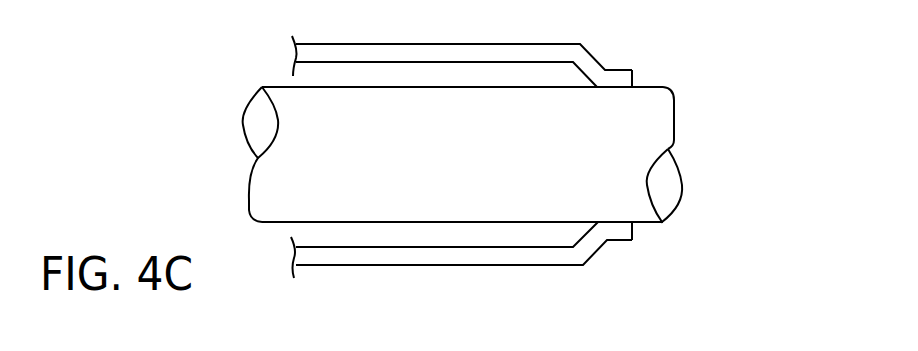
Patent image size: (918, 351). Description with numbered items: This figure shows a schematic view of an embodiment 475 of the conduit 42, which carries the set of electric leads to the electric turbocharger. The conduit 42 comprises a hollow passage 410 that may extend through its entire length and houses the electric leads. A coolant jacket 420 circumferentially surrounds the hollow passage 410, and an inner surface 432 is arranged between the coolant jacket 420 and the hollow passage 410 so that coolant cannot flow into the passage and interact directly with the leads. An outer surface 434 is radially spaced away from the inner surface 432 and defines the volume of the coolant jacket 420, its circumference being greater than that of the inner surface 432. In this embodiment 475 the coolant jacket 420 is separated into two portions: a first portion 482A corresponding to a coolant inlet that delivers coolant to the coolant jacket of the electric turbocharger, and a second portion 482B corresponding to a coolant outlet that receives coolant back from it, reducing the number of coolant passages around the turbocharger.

The outer surface 434 is at (412, 43).
The conduit 42 is at (640, 78).
The inner surface 432 is at (436, 88).
The embodiment of the conduit 475 is at (700, 36).
The hollow passage 410 is at (246, 133).
The coolant jacket 420 is at (462, 250).
The first portion 482A is at (303, 80).
The second portion 482B is at (303, 231).